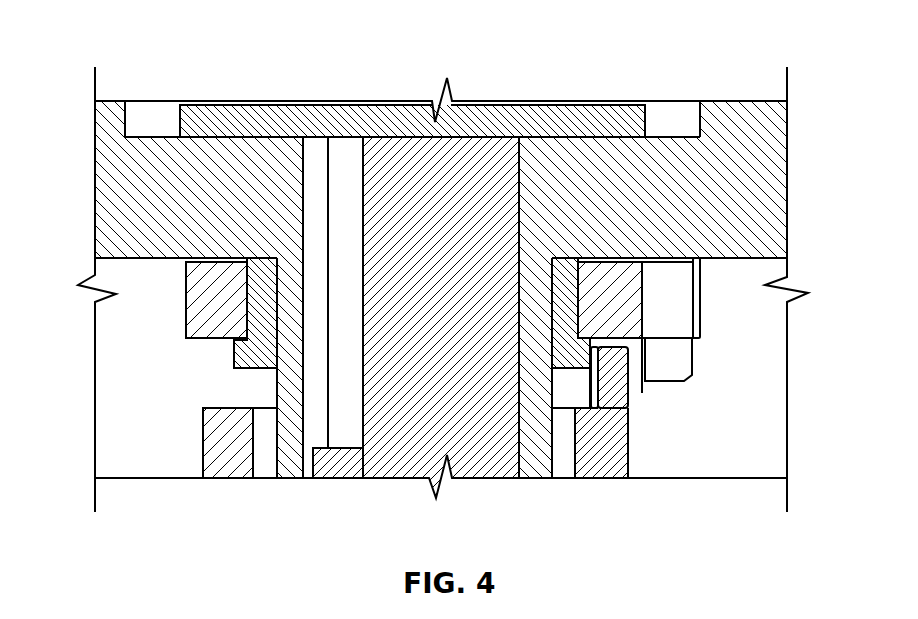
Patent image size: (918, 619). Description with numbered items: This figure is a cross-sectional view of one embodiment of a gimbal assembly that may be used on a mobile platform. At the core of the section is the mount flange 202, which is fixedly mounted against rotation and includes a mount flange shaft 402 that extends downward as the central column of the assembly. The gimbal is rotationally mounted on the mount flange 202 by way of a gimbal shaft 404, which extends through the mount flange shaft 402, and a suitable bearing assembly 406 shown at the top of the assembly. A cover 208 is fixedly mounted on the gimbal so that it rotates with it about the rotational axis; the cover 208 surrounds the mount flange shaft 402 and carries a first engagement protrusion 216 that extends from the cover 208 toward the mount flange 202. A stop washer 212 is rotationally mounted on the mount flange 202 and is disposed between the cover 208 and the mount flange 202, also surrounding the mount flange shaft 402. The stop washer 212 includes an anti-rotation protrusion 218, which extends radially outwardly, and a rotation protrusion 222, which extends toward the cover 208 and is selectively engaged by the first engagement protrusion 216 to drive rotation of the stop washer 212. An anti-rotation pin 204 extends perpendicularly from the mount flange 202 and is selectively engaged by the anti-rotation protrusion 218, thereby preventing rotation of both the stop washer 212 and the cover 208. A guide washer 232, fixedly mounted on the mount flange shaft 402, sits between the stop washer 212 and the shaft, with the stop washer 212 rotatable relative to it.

The mount flange 202 is at (95, 203).
The anti-rotation pin 204 is at (632, 360).
The cover 208 is at (628, 427).
The stop washer 212 is at (186, 300).
The first engagement protrusion 216 is at (610, 374).
The anti-rotation protrusion 218 is at (707, 292).
The rotation protrusion 222 is at (692, 350).
The guide washer 232 is at (263, 262).
The mount flange shaft 402 is at (277, 385).
The gimbal shaft 404 is at (357, 468).
The bearing assembly 406 is at (573, 116).